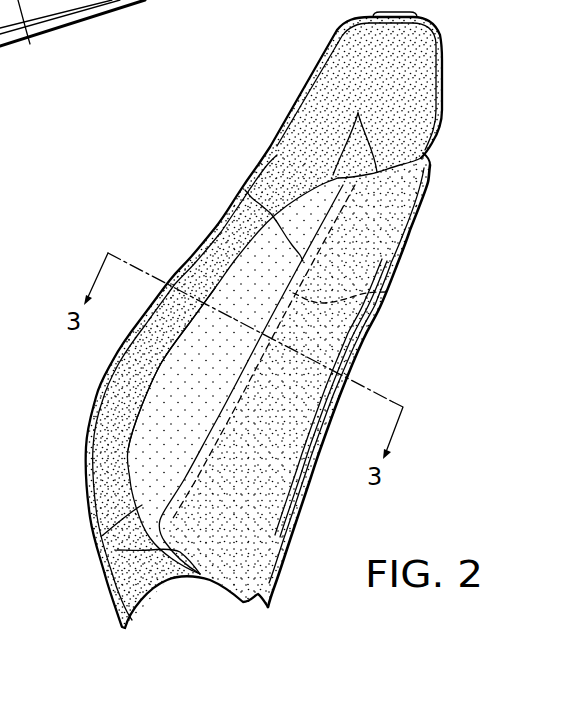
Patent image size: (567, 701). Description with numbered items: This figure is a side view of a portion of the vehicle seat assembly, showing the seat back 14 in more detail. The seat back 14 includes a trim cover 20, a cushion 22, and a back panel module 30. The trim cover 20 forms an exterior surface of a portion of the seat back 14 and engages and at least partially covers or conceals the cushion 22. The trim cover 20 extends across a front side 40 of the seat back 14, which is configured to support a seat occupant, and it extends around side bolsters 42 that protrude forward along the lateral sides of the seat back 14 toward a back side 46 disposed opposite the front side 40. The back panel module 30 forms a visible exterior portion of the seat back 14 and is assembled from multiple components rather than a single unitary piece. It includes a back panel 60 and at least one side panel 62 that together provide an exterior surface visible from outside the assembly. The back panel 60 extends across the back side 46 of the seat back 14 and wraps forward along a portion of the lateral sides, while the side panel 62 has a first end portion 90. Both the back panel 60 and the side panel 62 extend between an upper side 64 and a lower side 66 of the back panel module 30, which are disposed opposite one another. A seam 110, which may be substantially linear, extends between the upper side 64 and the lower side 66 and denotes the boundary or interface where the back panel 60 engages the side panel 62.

The seat back 14 is at (445, 118).
The trim cover 20 is at (281, 129).
The cushion 22 is at (323, 80).
The back panel module 30 is at (412, 230).
The front side 40 is at (169, 238).
The side bolsters 42 is at (90, 400).
The back side 46 is at (380, 370).
The back panel 60 is at (257, 379).
The side panel 62 is at (171, 369).
The upper side 64 is at (355, 133).
The lower side 66 is at (117, 550).
The first end portion 90 is at (387, 292).
The seam 110 is at (245, 190).